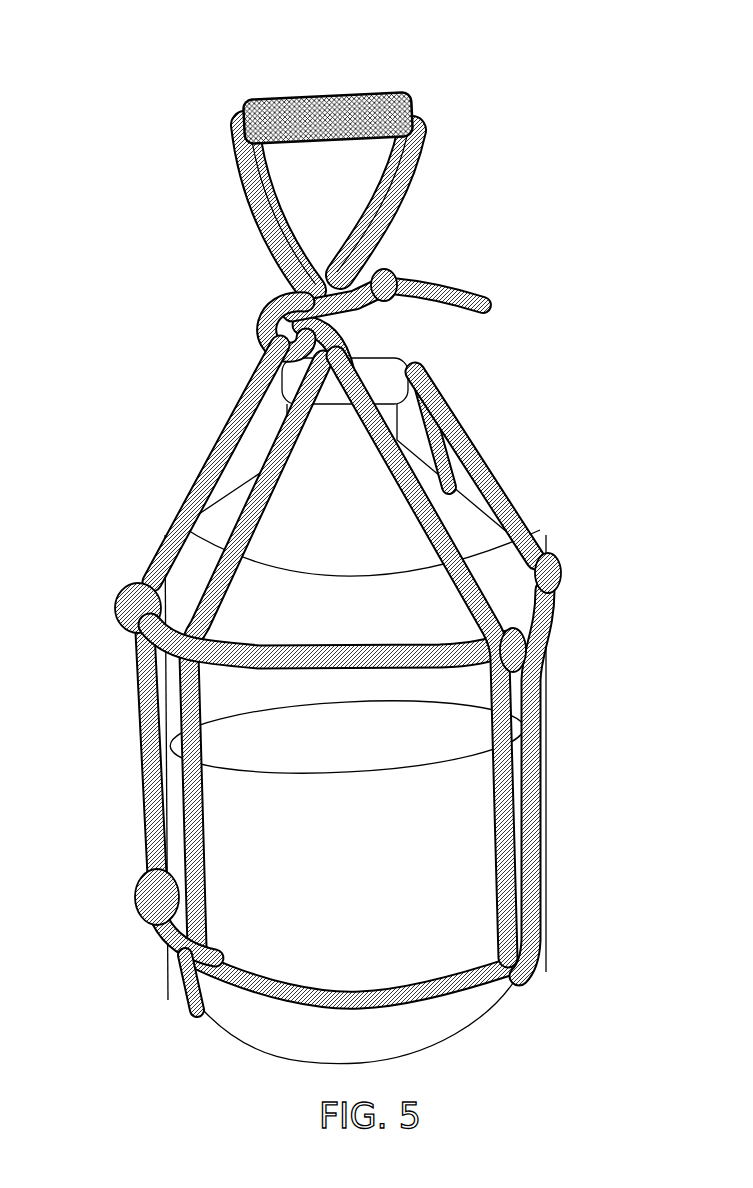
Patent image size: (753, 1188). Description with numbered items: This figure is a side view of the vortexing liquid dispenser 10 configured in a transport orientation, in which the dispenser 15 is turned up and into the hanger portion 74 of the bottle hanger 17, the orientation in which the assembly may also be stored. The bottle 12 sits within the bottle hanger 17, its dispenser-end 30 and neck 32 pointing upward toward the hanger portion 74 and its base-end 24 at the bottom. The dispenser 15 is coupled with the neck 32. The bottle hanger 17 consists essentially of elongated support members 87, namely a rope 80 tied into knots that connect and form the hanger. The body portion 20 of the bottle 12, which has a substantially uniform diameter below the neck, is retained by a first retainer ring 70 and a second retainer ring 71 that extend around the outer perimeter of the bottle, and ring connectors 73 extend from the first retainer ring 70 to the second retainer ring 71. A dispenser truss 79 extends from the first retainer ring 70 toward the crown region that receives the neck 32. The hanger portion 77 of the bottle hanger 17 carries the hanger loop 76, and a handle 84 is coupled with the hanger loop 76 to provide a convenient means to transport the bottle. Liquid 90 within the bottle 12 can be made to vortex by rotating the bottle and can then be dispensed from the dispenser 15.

The vortexing liquid dispenser 10 is at (338, 556).
The bottle 12 is at (518, 565).
The dispenser 15 is at (368, 340).
The bottle hanger 17 is at (545, 607).
The body portion 20 is at (475, 812).
The base-end 24 is at (243, 1033).
The dispenser-end 30 is at (455, 512).
The neck 32 is at (247, 398).
The first retainer ring 70 is at (343, 664).
The second retainer ring 71 is at (342, 988).
The ring connectors 73 is at (147, 756).
The hanger portion 74 is at (478, 465).
The hanger loop 76 is at (243, 197).
The hanger portion 77 is at (185, 463).
The dispenser truss 79 is at (192, 1007).
The rope 80 is at (118, 605).
The handle 84 is at (337, 98).
The elongated support members 87 is at (583, 770).
The liquid 90 is at (382, 762).